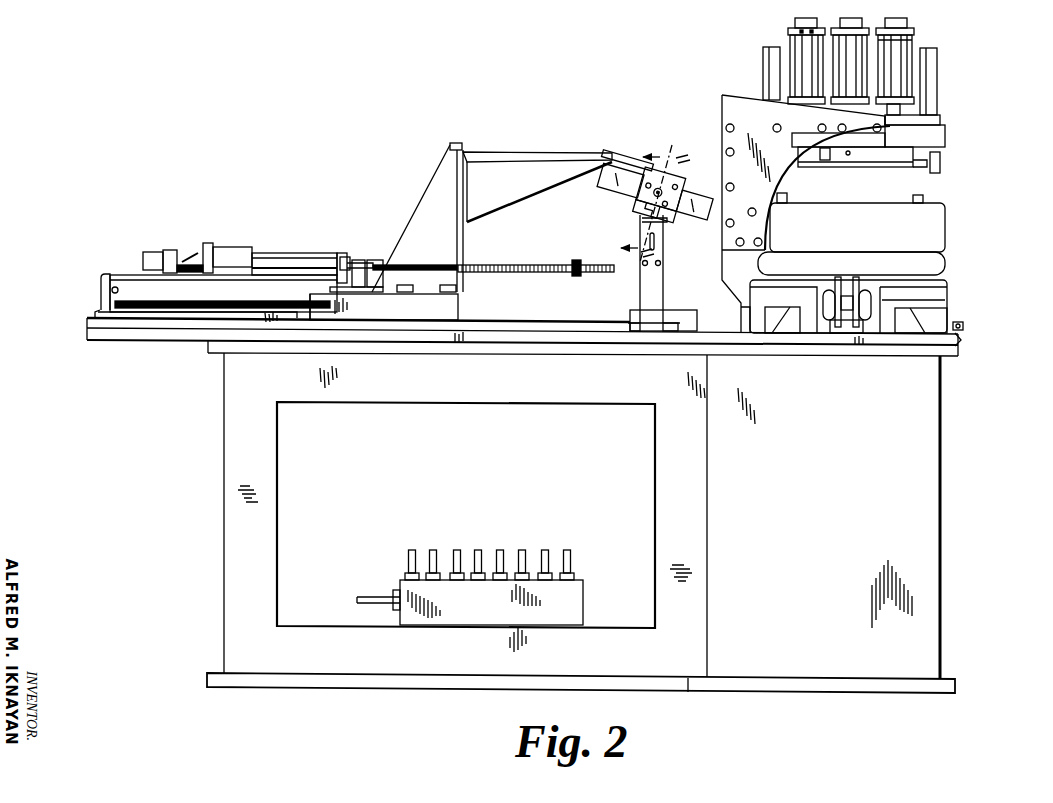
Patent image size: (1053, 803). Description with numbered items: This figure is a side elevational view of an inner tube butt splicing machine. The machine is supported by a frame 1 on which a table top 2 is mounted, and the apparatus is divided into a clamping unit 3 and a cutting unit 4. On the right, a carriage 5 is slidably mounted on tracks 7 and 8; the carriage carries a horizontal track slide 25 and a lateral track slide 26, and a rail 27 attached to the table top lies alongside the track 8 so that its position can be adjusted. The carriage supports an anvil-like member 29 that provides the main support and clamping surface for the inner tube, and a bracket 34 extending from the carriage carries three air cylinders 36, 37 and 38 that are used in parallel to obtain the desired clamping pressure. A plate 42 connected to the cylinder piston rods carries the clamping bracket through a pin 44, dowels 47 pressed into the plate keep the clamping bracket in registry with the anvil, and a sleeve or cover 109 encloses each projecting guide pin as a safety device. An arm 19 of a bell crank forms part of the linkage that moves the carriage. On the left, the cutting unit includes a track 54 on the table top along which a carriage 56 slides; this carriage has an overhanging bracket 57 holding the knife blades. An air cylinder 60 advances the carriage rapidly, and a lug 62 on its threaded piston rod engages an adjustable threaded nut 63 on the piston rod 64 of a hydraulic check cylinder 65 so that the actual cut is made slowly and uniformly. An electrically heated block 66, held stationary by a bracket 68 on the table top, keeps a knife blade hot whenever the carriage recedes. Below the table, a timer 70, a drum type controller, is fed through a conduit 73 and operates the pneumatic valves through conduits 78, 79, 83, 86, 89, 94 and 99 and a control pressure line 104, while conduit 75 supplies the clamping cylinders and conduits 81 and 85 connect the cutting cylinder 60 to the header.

The frame 1 is at (233, 541).
The table top 2 is at (172, 334).
The clamping unit 3 is at (988, 107).
The cutting unit 4 is at (332, 150).
The carriage 5 is at (928, 290).
The track 7 is at (758, 326).
The track 8 is at (950, 316).
The arm 19 is at (845, 325).
The horizontal track slide 25 is at (945, 300).
The lateral track slide 26 is at (905, 325).
The rail 27 is at (958, 338).
The anvil-like member 29 is at (945, 220).
The bracket 34 is at (732, 117).
The air cylinder 36 is at (906, 48).
The air cylinder 37 is at (853, 20).
The air cylinder 38 is at (797, 45).
The plate 42 is at (933, 176).
The pin 44 is at (850, 155).
The dowels 47 is at (942, 155).
The track 54 is at (495, 315).
The carriage 56 is at (390, 298).
The overhanging bracket 57 is at (540, 172).
The air cylinder 60 is at (137, 278).
The lug 62 is at (380, 262).
The adjustable threaded nut 63 is at (576, 263).
The piston rod 64 is at (513, 266).
The hydraulic check cylinder 65 is at (300, 258).
The electrically heated block 66 is at (700, 188).
The bracket 68 is at (647, 296).
The timer 70 is at (468, 610).
The conduit 73 is at (375, 605).
The conduit 75 is at (808, 24).
The conduit 78 is at (408, 558).
The conduit 79 is at (522, 550).
The conduit 81 is at (100, 290).
The conduit 83 is at (545, 550).
The conduit 85 is at (330, 258).
The conduit 86 is at (572, 560).
The conduit 89 is at (457, 550).
The conduit 94 is at (500, 550).
The conduit 99 is at (478, 550).
The control pressure line 104 is at (433, 550).
The sleeve or cover 109 is at (768, 79).